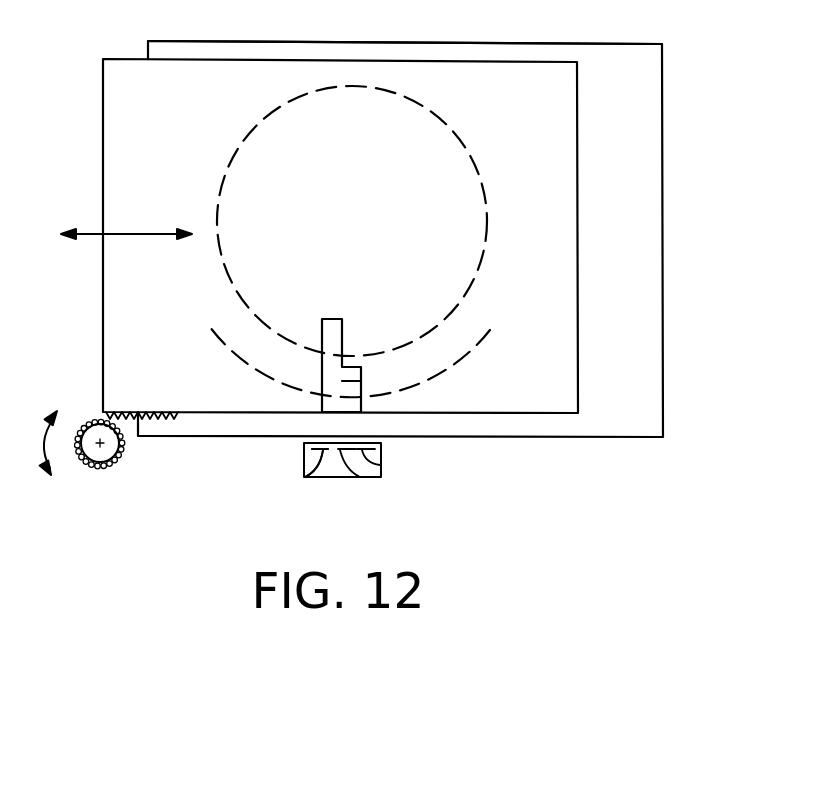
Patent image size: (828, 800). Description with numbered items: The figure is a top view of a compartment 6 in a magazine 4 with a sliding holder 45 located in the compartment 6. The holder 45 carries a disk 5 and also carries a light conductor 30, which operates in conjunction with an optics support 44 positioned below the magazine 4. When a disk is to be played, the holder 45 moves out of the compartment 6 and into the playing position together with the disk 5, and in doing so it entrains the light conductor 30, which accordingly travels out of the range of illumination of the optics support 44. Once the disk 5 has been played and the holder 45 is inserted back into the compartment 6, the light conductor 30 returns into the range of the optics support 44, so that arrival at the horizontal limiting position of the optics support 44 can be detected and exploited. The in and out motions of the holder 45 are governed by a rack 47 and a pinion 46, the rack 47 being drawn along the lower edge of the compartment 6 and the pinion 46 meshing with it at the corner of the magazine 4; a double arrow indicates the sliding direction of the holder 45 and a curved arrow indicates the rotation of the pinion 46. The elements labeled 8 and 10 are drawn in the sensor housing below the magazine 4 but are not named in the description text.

The magazine 4 is at (662, 53).
The compartment 6 is at (645, 192).
The sliding holder 45 is at (480, 75).
The disk 5 is at (465, 238).
The light conductor 30 is at (322, 370).
The rack 47 is at (147, 408).
The pinion 46 is at (102, 455).
The sensor housing 8 is at (358, 475).
The sensor 10 is at (304, 472).
The optics support 44 is at (323, 467).